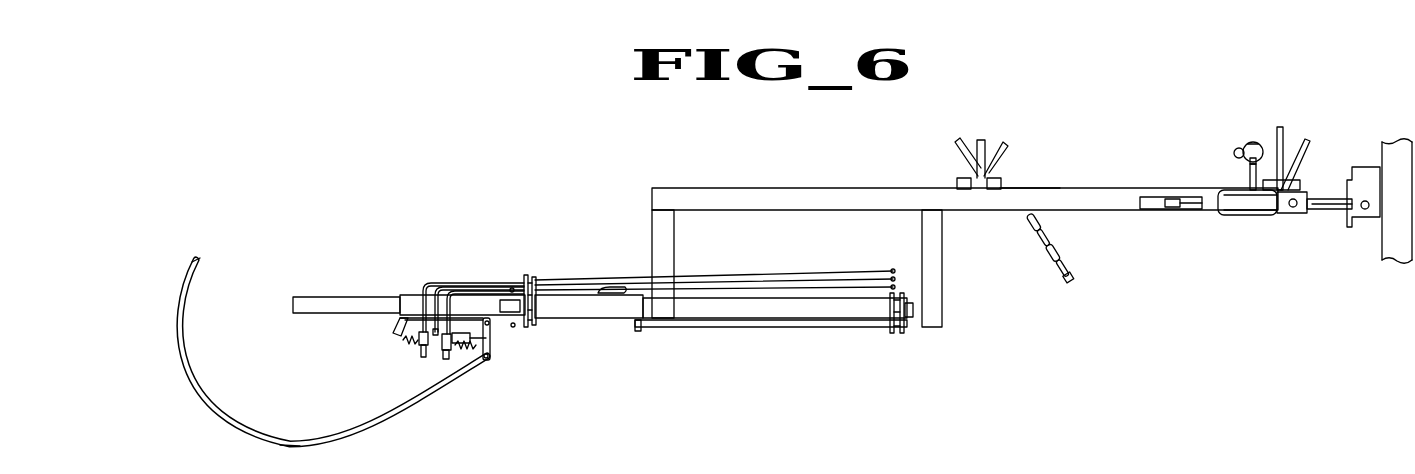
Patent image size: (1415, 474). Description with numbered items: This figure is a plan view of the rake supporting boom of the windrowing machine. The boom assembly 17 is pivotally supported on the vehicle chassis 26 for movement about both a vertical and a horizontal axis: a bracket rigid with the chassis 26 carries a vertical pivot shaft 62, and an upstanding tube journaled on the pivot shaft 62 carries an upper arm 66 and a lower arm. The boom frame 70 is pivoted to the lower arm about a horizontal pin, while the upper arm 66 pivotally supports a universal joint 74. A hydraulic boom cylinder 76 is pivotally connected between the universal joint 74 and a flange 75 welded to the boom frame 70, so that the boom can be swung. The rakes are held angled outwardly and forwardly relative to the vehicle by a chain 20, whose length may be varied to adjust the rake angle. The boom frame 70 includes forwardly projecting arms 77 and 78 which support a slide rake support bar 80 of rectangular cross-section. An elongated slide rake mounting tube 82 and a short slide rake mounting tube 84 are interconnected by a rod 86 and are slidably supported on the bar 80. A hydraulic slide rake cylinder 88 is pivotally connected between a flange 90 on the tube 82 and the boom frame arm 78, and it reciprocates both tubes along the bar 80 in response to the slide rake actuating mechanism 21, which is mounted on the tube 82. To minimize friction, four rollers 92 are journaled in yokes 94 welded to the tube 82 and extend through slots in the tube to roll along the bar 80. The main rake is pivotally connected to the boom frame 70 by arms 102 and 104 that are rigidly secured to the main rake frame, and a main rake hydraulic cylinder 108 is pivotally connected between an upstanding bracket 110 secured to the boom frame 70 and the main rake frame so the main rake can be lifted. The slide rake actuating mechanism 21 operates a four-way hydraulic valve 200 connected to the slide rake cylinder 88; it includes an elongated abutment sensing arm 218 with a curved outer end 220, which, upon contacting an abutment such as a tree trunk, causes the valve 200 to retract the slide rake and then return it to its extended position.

The boom assembly 17 is at (711, 186).
The chain 20 is at (1034, 237).
The slide rake actuating mechanism 21 is at (294, 449).
The vehicle chassis 26 is at (1392, 258).
The vertical pivot shaft 62 is at (1366, 212).
The upper arm 66 is at (1330, 199).
The boom frame 70 is at (1018, 192).
The universal joint 74 is at (1302, 214).
The flange 75 is at (1147, 198).
The hydraulic boom cylinder 76 is at (1250, 215).
The forwardly projecting arm 77 is at (652, 223).
The forwardly projecting arm 78 is at (943, 280).
The slide rake support bar 80 is at (298, 296).
The elongated slide rake mounting tube 82 is at (606, 318).
The short slide rake mounting tube 84 is at (905, 312).
The rod 86 is at (703, 330).
The hydraulic slide rake cylinder 88 is at (776, 290).
The flange 90 is at (600, 292).
The rollers 92 is at (537, 302).
The yokes 94 is at (511, 292).
The arm 102 is at (986, 150).
The arm 104 is at (1277, 130).
The main rake hydraulic cylinder 108 is at (1244, 150).
The upstanding bracket 110 is at (1248, 174).
The four-way hydraulic valve 200 is at (418, 340).
The abutment sensing arm 218 is at (222, 414).
The curved outer end 220 is at (193, 265).